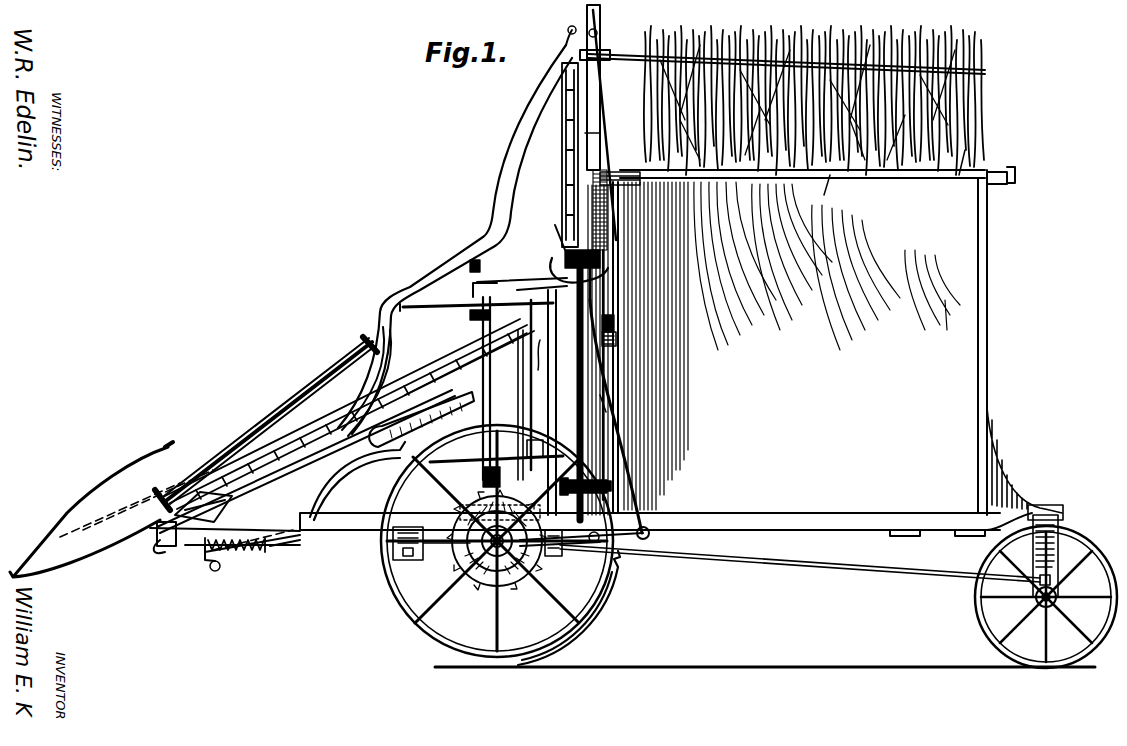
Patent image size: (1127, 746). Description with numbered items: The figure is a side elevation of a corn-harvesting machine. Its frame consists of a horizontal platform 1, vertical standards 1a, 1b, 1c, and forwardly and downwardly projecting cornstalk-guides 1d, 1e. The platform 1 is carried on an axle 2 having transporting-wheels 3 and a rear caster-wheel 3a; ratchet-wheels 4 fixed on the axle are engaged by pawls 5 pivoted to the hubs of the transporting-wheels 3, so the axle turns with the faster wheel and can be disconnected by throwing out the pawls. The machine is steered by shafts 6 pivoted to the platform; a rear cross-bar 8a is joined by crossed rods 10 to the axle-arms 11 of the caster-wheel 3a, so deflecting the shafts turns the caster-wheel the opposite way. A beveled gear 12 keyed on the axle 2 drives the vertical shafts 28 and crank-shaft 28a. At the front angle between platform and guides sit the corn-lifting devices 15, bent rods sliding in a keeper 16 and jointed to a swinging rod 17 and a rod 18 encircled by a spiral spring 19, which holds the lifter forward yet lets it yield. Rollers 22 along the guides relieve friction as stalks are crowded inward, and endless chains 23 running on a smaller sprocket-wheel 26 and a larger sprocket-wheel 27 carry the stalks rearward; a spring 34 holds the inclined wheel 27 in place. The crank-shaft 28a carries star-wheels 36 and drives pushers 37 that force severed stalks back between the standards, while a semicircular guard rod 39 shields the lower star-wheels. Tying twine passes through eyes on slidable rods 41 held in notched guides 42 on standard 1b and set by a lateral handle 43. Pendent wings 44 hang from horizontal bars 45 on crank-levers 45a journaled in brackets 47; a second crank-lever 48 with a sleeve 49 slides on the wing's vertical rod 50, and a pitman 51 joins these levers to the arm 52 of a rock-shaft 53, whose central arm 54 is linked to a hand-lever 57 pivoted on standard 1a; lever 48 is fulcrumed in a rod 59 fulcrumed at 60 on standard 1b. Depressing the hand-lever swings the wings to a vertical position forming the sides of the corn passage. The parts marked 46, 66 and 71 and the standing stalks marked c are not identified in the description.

The horizontal platform 1 is at (338, 522).
The vertical central standard 1a is at (605, 52).
The side standard 1b is at (560, 158).
The vertical standard 1c is at (1024, 460).
The cornstalk-guide 1d is at (306, 461).
The cornstalk-guide 1e is at (374, 381).
The axle 2 is at (455, 560).
The transporting-wheel 3 is at (385, 478).
The rear caster-wheel 3a is at (1080, 556).
The ratchet-wheel 4 is at (497, 541).
The pawl 5 is at (553, 556).
The shaft 6 is at (930, 62).
The rear cross-bar 8a is at (425, 560).
The crossed rods 10 is at (878, 573).
The axle-arms 11 is at (1030, 612).
The beveled gear 12 is at (472, 598).
The corn-lifting device 15 is at (96, 492).
The keeper 16 is at (160, 546).
The swinging rod 17 is at (210, 566).
The guide-rod 18 is at (282, 550).
The spiral spring 19 is at (240, 552).
The roller 22 is at (330, 368).
The endless traveling chain 23 is at (408, 370).
The smaller sprocket-wheel 26 is at (232, 500).
The larger sprocket-wheel 27 is at (518, 380).
The vertical shaft 28 is at (482, 330).
The crank-shaft 28a is at (480, 282).
The spring 34 is at (440, 372).
The star-wheel 36 is at (462, 306).
The pusher 37 is at (545, 280).
The guard rod 39 is at (372, 456).
The vertically-slidable rod 41 is at (564, 40).
The guide 42 is at (562, 116).
The lateral handle 43 is at (590, 133).
The pendent wing 44 is at (814, 341).
The horizontal bar 45 is at (905, 170).
The crank-lever 45a is at (565, 258).
The hatched guide block 46 is at (608, 207).
The bracket 47 is at (555, 240).
The second crank-lever 48 is at (616, 318).
The sleeve 49 is at (618, 340).
The vertical rod 50 is at (628, 236).
The pitman 51 is at (628, 485).
The arm 52 is at (648, 538).
The rock-shaft 53 is at (600, 545).
The central arm 54 is at (590, 540).
The hand-lever 57 is at (421, 419).
The rod 59 is at (606, 410).
The fulcrum 60 is at (585, 495).
The top post 66 is at (600, 22).
The rod 71 is at (541, 366).
The corn stalks c is at (958, 128).